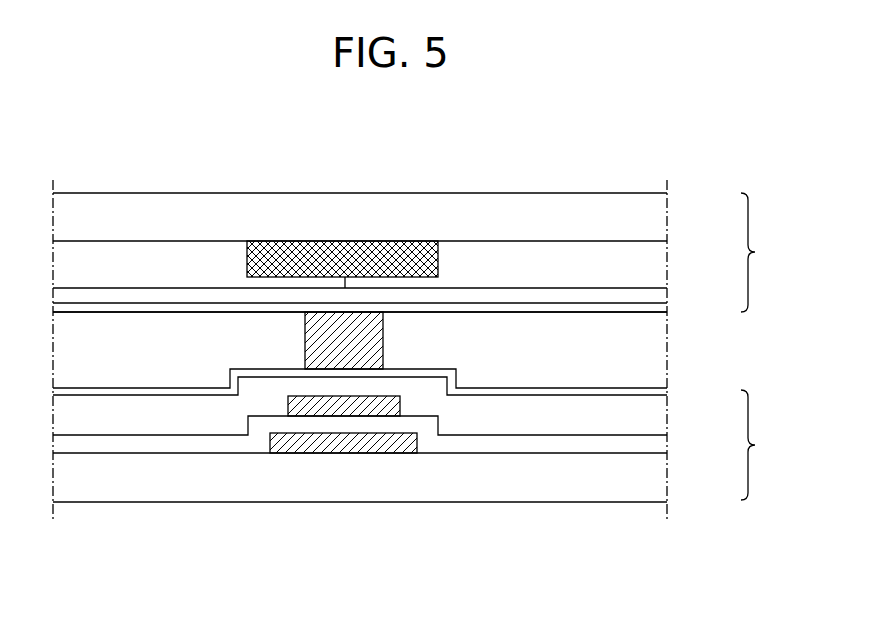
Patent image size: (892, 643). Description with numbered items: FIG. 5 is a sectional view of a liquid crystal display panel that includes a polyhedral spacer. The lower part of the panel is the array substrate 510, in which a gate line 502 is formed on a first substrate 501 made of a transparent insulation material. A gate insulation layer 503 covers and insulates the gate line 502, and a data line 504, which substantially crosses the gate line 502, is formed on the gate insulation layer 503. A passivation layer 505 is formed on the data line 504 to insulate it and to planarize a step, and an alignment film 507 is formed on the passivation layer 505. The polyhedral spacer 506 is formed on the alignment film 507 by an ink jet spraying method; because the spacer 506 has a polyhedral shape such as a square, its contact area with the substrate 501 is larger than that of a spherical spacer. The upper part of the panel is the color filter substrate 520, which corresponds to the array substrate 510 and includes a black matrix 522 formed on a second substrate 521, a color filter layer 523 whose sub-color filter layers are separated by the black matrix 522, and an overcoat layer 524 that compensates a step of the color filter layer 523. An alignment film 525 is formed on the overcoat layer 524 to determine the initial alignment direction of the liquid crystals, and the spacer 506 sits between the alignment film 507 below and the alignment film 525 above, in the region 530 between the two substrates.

The first substrate 501 is at (660, 483).
The gate line 502 is at (320, 453).
The gate insulation layer 503 is at (660, 446).
The data line 504 is at (379, 410).
The passivation layer 505 is at (660, 416).
The polyhedral spacer 506 is at (383, 342).
The alignment film 507 is at (660, 392).
The array substrate 510 is at (766, 445).
The color filter substrate 520 is at (766, 252).
The second substrate 521 is at (660, 218).
The black matrix 522 is at (362, 241).
The color filter layer 523 is at (660, 258).
The overcoat layer 524 is at (660, 296).
The alignment film 525 is at (660, 312).
The liquid crystal layer 530 is at (660, 352).